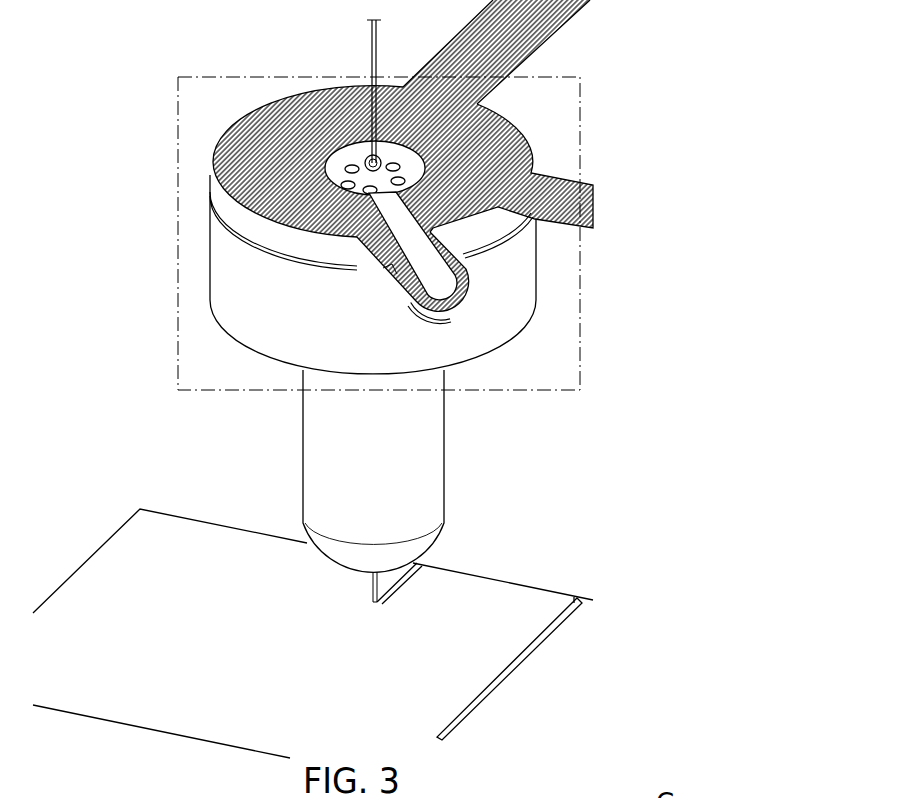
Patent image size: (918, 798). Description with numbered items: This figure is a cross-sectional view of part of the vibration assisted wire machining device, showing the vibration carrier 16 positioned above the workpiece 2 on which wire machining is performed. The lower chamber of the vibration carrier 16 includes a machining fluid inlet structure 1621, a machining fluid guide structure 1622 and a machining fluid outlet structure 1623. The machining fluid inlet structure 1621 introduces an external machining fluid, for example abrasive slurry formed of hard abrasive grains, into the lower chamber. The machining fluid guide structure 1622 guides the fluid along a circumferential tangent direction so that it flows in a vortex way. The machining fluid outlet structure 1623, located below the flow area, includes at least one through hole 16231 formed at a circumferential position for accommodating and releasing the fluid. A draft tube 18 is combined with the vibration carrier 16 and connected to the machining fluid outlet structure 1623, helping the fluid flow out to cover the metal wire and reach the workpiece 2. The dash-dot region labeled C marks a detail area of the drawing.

The workpiece 2 is at (168, 532).
The vibration carrier 16 is at (487, 335).
The draft tube 18 is at (420, 473).
The machining fluid inlet structure 1621 is at (411, 261).
The machining fluid guide structure 1622 is at (330, 133).
The machining fluid outlet structure 1623 is at (385, 163).
The through hole 16231 is at (272, 207).
The detail region C is at (555, 77).